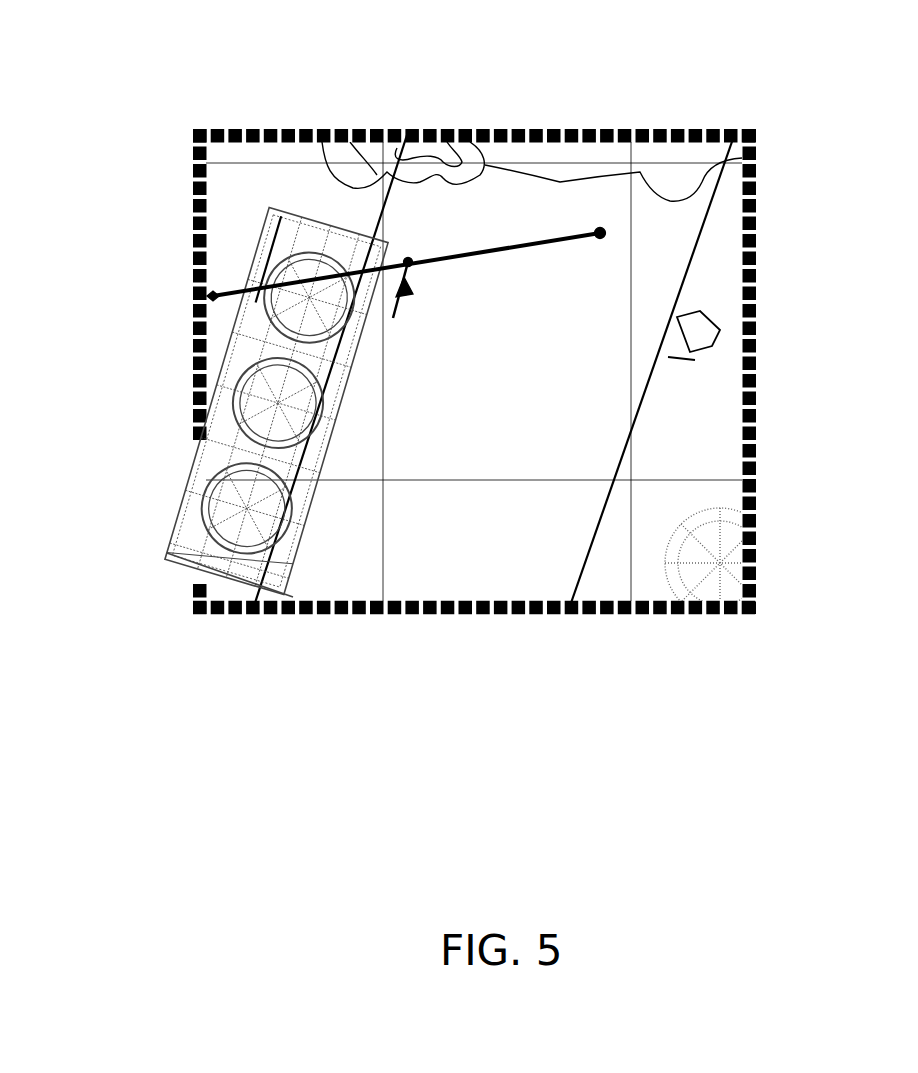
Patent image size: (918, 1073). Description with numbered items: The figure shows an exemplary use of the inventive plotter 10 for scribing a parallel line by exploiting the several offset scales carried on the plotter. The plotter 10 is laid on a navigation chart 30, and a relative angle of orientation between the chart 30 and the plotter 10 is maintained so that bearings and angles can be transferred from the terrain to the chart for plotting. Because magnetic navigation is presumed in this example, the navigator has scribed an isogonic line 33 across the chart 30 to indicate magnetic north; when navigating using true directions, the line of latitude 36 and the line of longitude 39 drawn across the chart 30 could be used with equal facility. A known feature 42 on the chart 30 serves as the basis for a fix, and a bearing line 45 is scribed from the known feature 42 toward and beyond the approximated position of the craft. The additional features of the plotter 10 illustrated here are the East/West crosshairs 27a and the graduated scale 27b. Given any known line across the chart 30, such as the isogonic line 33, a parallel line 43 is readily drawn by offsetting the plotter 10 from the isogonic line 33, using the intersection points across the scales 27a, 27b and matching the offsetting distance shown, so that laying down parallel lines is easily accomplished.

The navigation chart 30 is at (296, 88).
The plotter 10 is at (196, 413).
The isogonic line 33 is at (195, 563).
The East/West crosshairs 27a is at (345, 451).
The graduated scale 27b is at (395, 497).
The line of latitude 36 is at (553, 484).
The line of longitude 39 is at (372, 612).
The known feature 42 is at (603, 231).
The parallel line 43 is at (398, 317).
The bearing line 45 is at (518, 240).